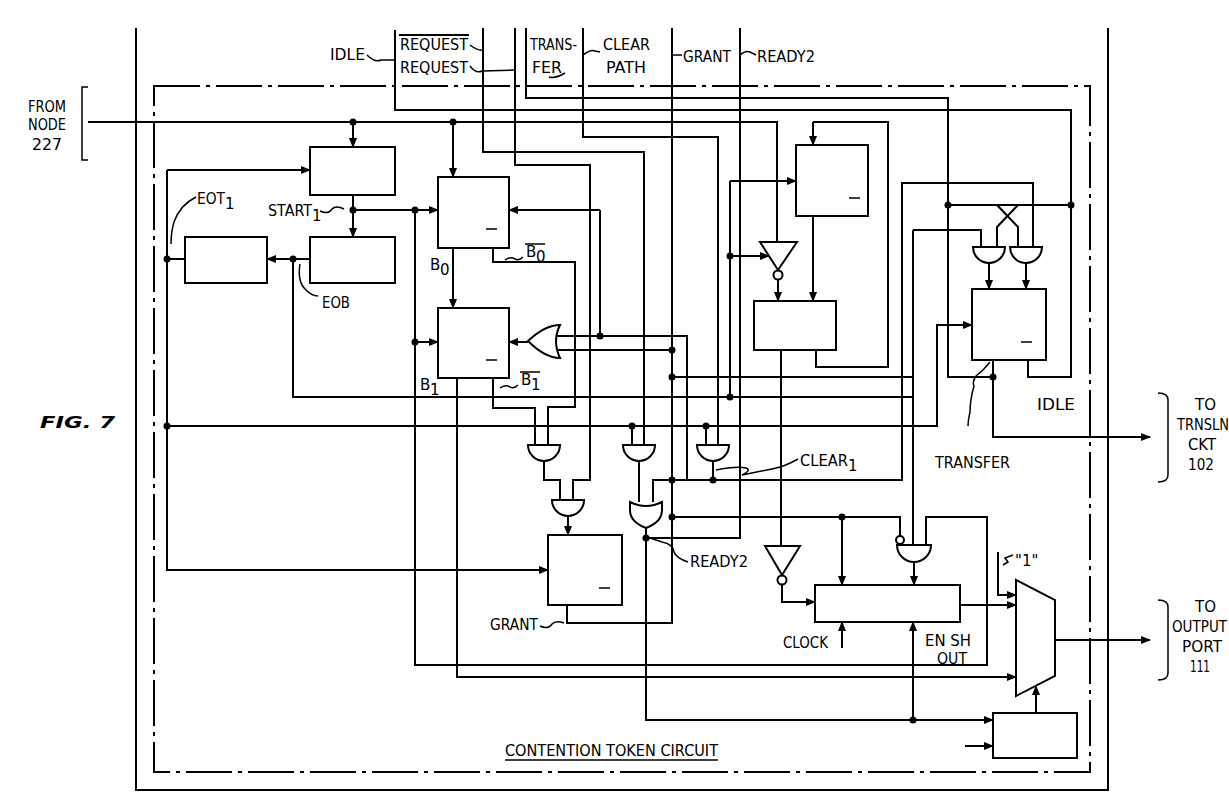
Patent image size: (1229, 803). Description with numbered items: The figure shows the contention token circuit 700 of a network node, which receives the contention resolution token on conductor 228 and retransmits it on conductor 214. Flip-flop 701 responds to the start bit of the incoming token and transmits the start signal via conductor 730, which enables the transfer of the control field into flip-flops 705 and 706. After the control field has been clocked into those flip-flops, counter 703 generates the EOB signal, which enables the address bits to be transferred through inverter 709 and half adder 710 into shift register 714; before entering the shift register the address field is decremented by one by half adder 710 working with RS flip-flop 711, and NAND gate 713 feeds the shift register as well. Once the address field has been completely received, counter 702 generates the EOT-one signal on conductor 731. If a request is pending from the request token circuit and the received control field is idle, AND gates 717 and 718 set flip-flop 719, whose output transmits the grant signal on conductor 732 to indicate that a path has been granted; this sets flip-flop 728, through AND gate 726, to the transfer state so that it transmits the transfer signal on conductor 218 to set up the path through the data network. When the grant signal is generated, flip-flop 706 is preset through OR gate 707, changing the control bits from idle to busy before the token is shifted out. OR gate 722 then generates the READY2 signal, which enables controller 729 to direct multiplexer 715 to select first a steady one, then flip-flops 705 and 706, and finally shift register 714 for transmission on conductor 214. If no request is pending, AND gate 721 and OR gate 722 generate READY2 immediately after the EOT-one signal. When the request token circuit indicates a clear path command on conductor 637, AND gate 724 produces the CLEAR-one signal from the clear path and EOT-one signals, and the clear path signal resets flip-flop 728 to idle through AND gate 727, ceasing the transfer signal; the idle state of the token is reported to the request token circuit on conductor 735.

The contention token circuit 700 is at (986, 86).
The flip-flop 701 is at (376, 152).
The counter 702 is at (209, 240).
The counter 703 is at (365, 241).
The flip-flop 705 is at (522, 176).
The flip-flop 706 is at (488, 308).
The OR gate 707 is at (541, 326).
The inverter 709 is at (762, 240).
The half adder 710 is at (836, 302).
The RS flip-flop 711 is at (825, 218).
The NAND gate 713 is at (930, 557).
The shift register 714 is at (939, 580).
The multiplexer 715 is at (1043, 600).
The AND gate 717 is at (527, 455).
The AND gate 718 is at (549, 510).
The flip-flop 719 is at (546, 546).
The AND gate 721 is at (632, 460).
The OR gate 722 is at (636, 507).
The AND gate 724 is at (728, 458).
The AND gate 726 is at (975, 260).
The AND gate 727 is at (1040, 260).
The flip-flop 728 is at (1010, 362).
The controller 729 is at (1044, 712).
The conductor 730 is at (403, 205).
The conductor 731 is at (167, 348).
The conductor 732 is at (673, 612).
The conductor 735 is at (975, 112).
The conductor 637 is at (690, 137).
The conductor 228 is at (110, 122).
The conductor 218 is at (1133, 433).
The conductor 214 is at (1133, 633).